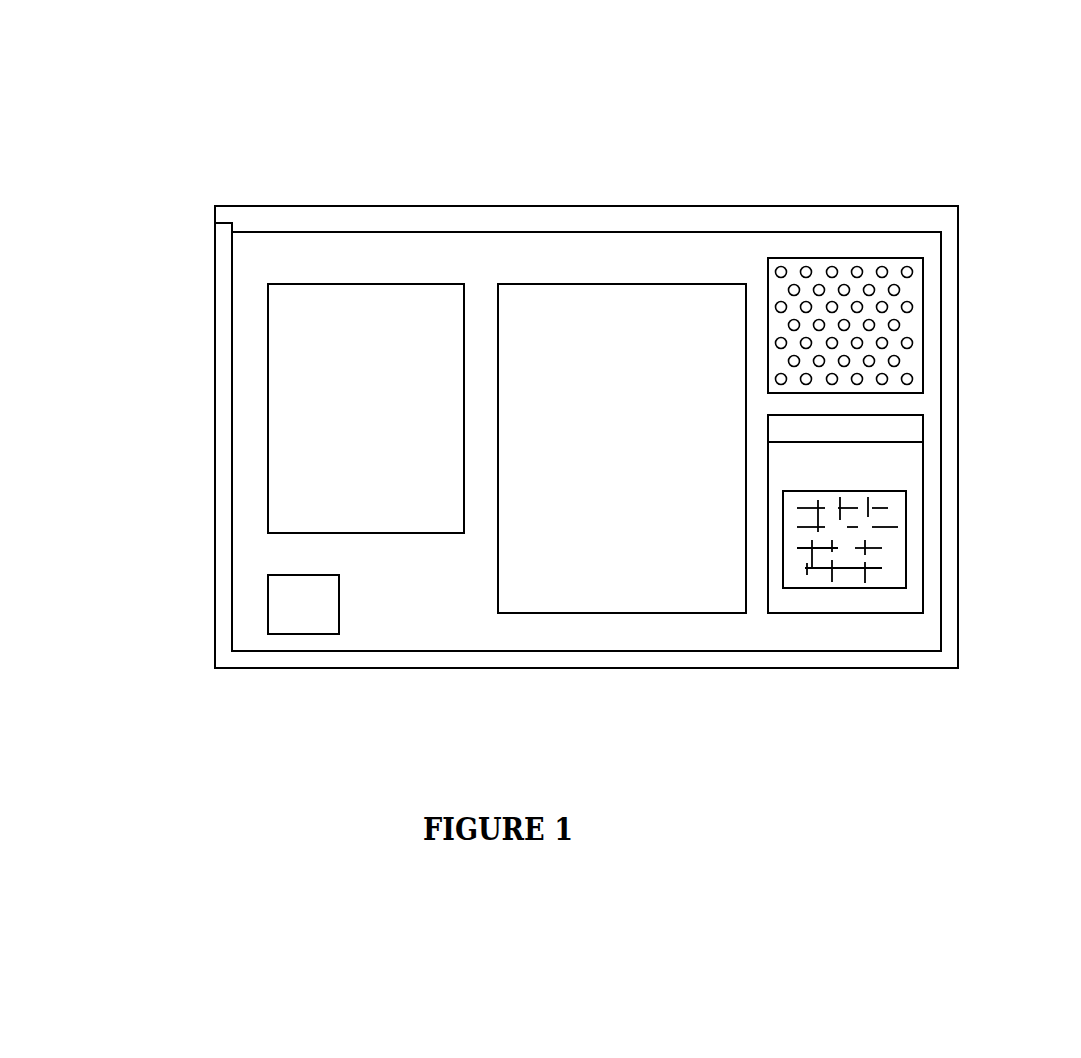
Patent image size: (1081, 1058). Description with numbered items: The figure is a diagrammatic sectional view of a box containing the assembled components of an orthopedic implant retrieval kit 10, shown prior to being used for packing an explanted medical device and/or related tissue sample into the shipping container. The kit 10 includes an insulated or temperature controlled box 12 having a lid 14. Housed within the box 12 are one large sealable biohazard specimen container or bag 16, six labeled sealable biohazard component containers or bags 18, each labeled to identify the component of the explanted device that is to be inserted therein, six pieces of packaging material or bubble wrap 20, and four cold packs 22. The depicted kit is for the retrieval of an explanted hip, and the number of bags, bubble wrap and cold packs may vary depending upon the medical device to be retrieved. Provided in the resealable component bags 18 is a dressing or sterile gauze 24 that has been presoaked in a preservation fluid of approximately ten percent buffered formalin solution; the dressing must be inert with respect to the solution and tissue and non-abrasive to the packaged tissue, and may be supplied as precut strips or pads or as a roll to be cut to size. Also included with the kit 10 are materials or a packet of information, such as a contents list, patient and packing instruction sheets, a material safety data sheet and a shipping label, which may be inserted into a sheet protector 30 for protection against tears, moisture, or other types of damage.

The kit 10 is at (957, 128).
The box 12 is at (960, 476).
The lid 14 is at (508, 207).
The specimen container or bag 16 is at (627, 497).
The component containers or bags 18 is at (912, 578).
The packaging material or bubble wrap 20 is at (912, 300).
The cold packs 22 is at (272, 620).
The dressing or sterile gauze 24 is at (891, 540).
The sheet protector 30 is at (287, 392).